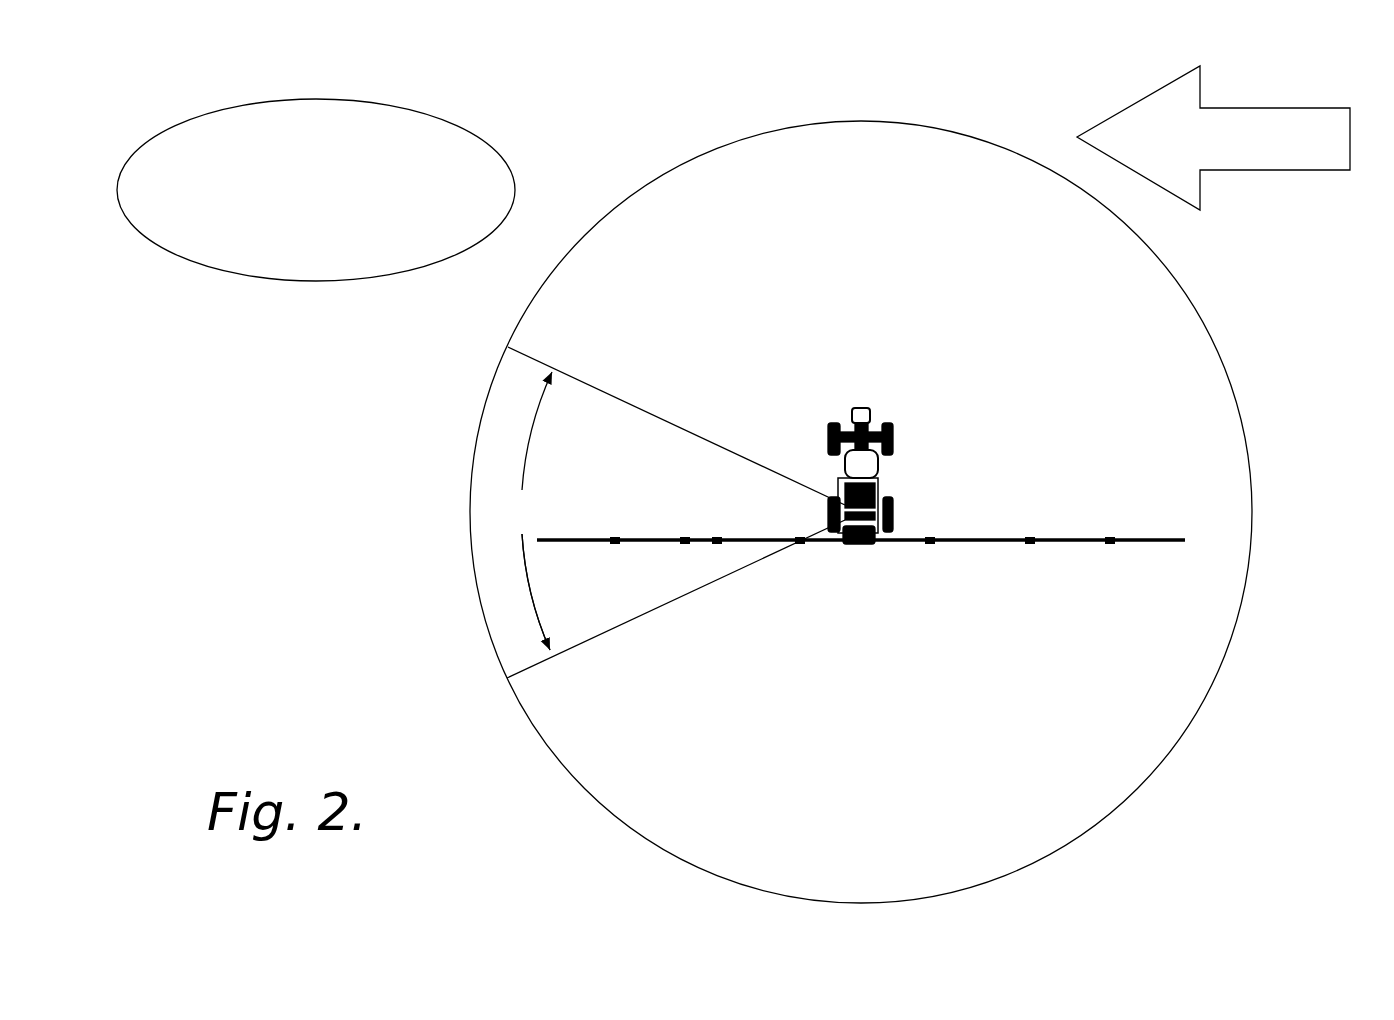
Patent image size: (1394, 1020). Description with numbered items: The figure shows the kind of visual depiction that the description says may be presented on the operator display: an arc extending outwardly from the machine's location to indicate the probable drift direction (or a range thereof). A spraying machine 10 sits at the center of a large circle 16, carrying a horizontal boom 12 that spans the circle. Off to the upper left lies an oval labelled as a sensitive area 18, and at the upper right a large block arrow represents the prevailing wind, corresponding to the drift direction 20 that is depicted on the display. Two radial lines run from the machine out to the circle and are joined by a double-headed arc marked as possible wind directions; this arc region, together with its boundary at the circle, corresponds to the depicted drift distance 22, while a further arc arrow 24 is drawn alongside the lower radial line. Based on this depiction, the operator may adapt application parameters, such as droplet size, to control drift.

The agricultural sprayer vehicle 10 is at (917, 441).
The spray boom 12 is at (957, 550).
The wind direction circle 16 is at (907, 247).
The sensitive area 18 is at (440, 128).
The drift direction 20 is at (1257, 95).
The drift distance 22 is at (498, 626).
The wind direction range arc arrow 24 is at (548, 669).